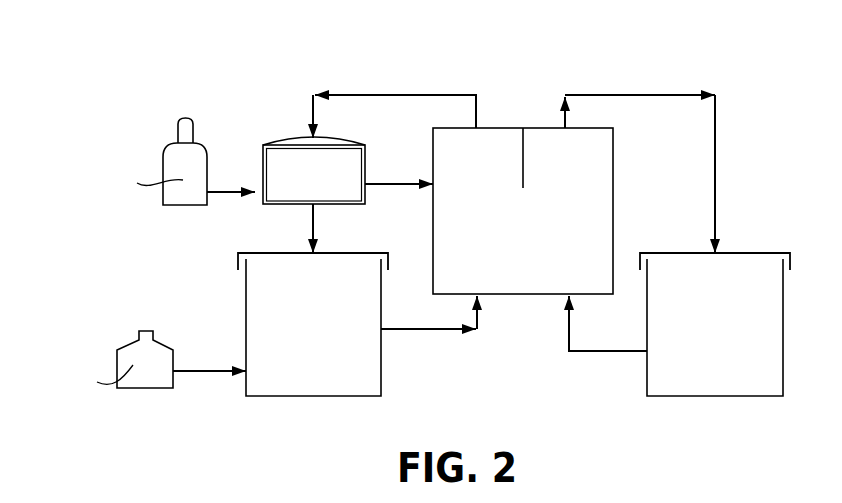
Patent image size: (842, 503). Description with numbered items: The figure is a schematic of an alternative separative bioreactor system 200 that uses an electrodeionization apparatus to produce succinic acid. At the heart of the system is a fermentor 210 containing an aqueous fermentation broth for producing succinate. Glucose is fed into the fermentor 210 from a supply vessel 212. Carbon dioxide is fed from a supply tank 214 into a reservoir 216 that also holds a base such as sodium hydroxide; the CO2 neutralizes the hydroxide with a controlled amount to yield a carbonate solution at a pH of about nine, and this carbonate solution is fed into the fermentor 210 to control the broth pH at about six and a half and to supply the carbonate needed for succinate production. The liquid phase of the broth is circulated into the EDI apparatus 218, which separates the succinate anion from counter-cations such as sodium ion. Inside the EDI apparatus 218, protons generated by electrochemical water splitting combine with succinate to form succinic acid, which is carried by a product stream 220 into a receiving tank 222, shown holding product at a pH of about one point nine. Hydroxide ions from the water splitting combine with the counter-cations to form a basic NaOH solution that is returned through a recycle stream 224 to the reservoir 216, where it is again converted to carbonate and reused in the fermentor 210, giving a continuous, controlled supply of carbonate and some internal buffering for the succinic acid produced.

The separative bioreactor system 200 is at (225, 84).
The fermentor 210 is at (266, 386).
The supply vessel 212 is at (148, 380).
The supply tank 214 is at (198, 157).
The reservoir 216 is at (372, 147).
The EDI apparatus 218 is at (499, 138).
The product stream 220 is at (672, 97).
The receiving tank 222 is at (722, 390).
The recycle stream 224 is at (418, 95).